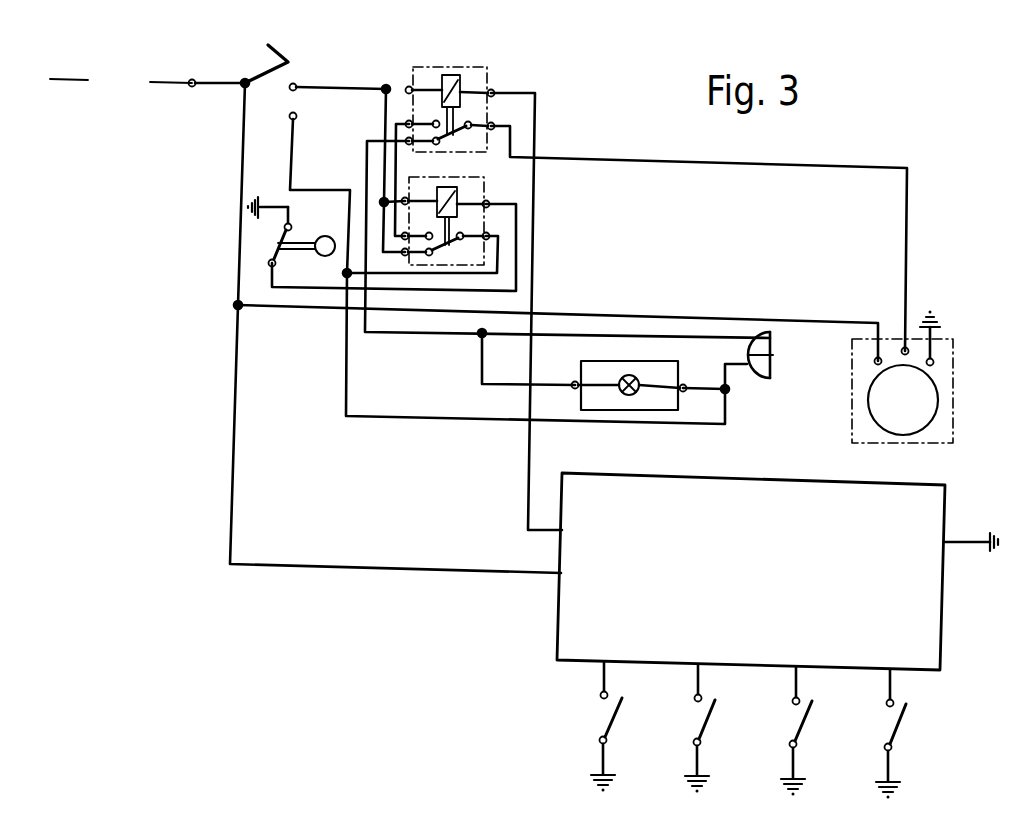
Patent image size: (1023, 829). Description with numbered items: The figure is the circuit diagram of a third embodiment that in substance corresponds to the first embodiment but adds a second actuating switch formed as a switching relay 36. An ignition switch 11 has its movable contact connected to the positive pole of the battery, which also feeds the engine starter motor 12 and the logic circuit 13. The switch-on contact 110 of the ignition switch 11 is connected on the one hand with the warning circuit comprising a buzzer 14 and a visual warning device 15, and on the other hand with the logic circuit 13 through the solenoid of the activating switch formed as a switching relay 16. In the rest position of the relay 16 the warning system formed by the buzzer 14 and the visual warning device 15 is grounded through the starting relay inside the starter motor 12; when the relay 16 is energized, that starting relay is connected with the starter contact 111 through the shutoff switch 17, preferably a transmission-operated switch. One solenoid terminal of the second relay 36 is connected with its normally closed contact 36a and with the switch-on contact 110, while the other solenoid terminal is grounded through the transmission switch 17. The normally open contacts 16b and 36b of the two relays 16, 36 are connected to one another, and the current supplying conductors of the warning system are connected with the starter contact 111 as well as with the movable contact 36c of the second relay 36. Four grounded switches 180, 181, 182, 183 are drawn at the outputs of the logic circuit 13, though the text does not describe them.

The ignition switch 11 is at (270, 62).
The switch-on contact 110 is at (295, 84).
The starter contact 111 is at (296, 116).
The switching relay 16 is at (488, 72).
The normally open contact 16b is at (432, 121).
The switching relay 36 is at (484, 181).
The normally closed contact 36a is at (436, 255).
The normally open contact 36b is at (427, 232).
The movable contact 36c is at (462, 233).
The shutoff switch 17 is at (302, 238).
The engine starter motor 12 is at (955, 369).
The buzzer 14 is at (763, 362).
The visual warning device 15 is at (583, 372).
The logic circuit 13 is at (928, 607).
The sensing switch 180 is at (617, 718).
The sensing switch 181 is at (712, 720).
The sensing switch 182 is at (806, 723).
The sensing switch 183 is at (901, 726).